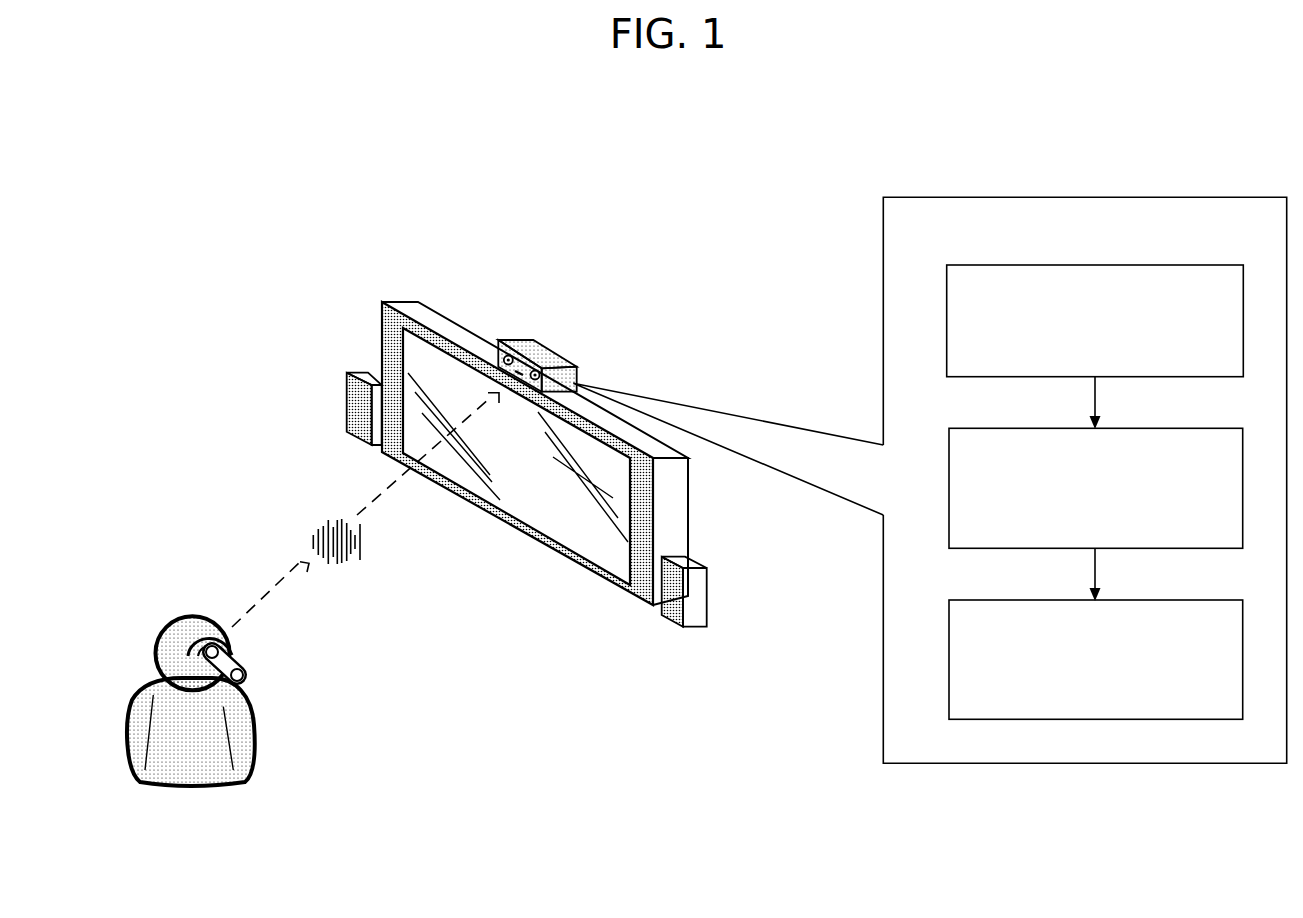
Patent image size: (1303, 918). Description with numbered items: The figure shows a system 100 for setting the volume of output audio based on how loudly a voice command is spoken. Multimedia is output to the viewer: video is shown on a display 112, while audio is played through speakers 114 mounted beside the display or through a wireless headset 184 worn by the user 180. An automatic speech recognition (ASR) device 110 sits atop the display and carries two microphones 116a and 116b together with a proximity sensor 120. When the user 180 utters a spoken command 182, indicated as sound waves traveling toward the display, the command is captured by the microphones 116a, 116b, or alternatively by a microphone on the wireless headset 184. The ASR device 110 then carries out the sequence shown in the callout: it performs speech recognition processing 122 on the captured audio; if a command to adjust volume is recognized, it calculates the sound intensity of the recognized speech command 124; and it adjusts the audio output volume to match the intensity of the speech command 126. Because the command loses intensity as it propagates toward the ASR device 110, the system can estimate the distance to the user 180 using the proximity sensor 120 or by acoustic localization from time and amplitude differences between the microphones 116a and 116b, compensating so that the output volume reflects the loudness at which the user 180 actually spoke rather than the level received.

The system 100 is at (262, 125).
The automatic speech recognition (ASR) device 110 is at (523, 347).
The display 112 is at (545, 505).
The speakers 114 is at (707, 598).
The microphone 116a is at (498, 345).
The microphone 116b is at (541, 373).
The proximity sensor 120 is at (518, 372).
The speech recognition processing 122 is at (962, 264).
The sound intensity calculation 124 is at (970, 428).
The audio output volume adjustment 126 is at (975, 600).
The user 180 is at (170, 621).
The spoken command 182 is at (304, 514).
The wireless headset 184 is at (260, 688).